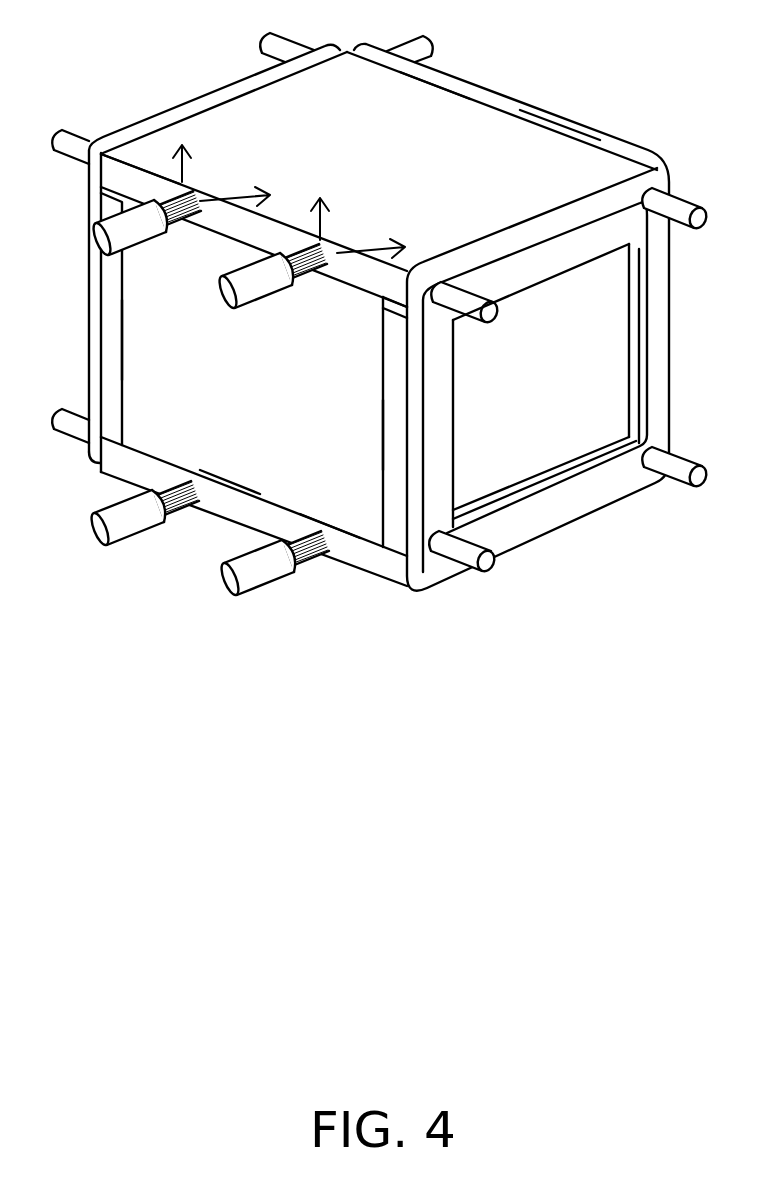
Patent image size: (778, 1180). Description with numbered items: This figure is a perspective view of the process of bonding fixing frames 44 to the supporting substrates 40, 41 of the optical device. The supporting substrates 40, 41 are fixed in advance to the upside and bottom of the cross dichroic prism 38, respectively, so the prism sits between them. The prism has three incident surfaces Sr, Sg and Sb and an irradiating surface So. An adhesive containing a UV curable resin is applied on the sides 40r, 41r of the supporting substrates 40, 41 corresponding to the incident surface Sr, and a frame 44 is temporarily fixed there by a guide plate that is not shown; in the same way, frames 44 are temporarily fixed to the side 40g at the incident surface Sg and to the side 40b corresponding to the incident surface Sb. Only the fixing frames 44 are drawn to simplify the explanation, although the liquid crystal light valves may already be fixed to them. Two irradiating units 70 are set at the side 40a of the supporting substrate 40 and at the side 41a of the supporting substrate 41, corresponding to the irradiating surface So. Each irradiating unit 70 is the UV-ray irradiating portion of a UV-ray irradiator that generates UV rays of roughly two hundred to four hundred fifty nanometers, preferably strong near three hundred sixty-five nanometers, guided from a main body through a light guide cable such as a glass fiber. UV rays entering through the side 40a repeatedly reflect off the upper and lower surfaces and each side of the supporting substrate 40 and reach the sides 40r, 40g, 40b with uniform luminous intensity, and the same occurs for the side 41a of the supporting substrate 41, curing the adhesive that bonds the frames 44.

The cross dichroic prism 38 is at (130, 335).
The supporting substrate 40 is at (483, 125).
The side of the supporting substrate 40a is at (270, 233).
The side of the supporting substrate 40b is at (227, 118).
The side of the supporting substrate 40g is at (460, 87).
The side of the supporting substrate 40r is at (520, 230).
The supporting substrate 41 is at (383, 568).
The side of the supporting substrate 41a is at (347, 553).
The side of the supporting substrate 41r is at (410, 580).
The fixing frame 44 is at (163, 113).
The irradiating unit 70 is at (140, 232).
The incident surface Sb is at (123, 380).
The incident surface Sg is at (565, 162).
The incident surface Sr is at (380, 437).
The irradiating surface So is at (232, 470).